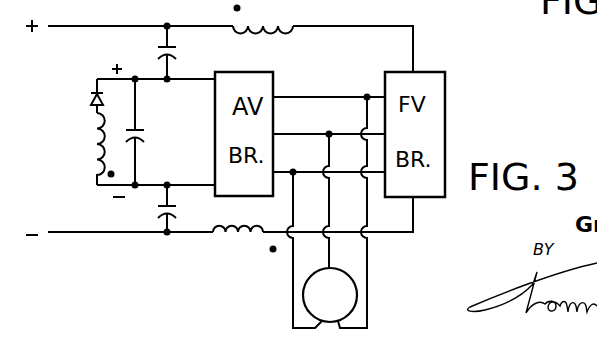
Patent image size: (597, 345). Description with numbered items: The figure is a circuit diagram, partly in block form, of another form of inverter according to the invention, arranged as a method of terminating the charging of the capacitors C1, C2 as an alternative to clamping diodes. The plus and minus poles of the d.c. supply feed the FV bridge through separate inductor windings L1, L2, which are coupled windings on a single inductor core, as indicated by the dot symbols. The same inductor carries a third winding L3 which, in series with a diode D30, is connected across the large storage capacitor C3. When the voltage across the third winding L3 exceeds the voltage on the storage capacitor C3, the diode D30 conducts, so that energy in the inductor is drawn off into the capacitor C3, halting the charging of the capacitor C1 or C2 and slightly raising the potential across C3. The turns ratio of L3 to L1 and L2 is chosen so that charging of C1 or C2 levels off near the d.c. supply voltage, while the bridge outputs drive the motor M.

The inductor winding L1 is at (263, 17).
The capacitor C1 is at (186, 52).
The diode D30 is at (76, 97).
The third winding L3 is at (83, 149).
The storage capacitor C3 is at (153, 132).
The capacitor C2 is at (184, 208).
The inductor winding L2 is at (238, 248).
The motor M is at (330, 295).